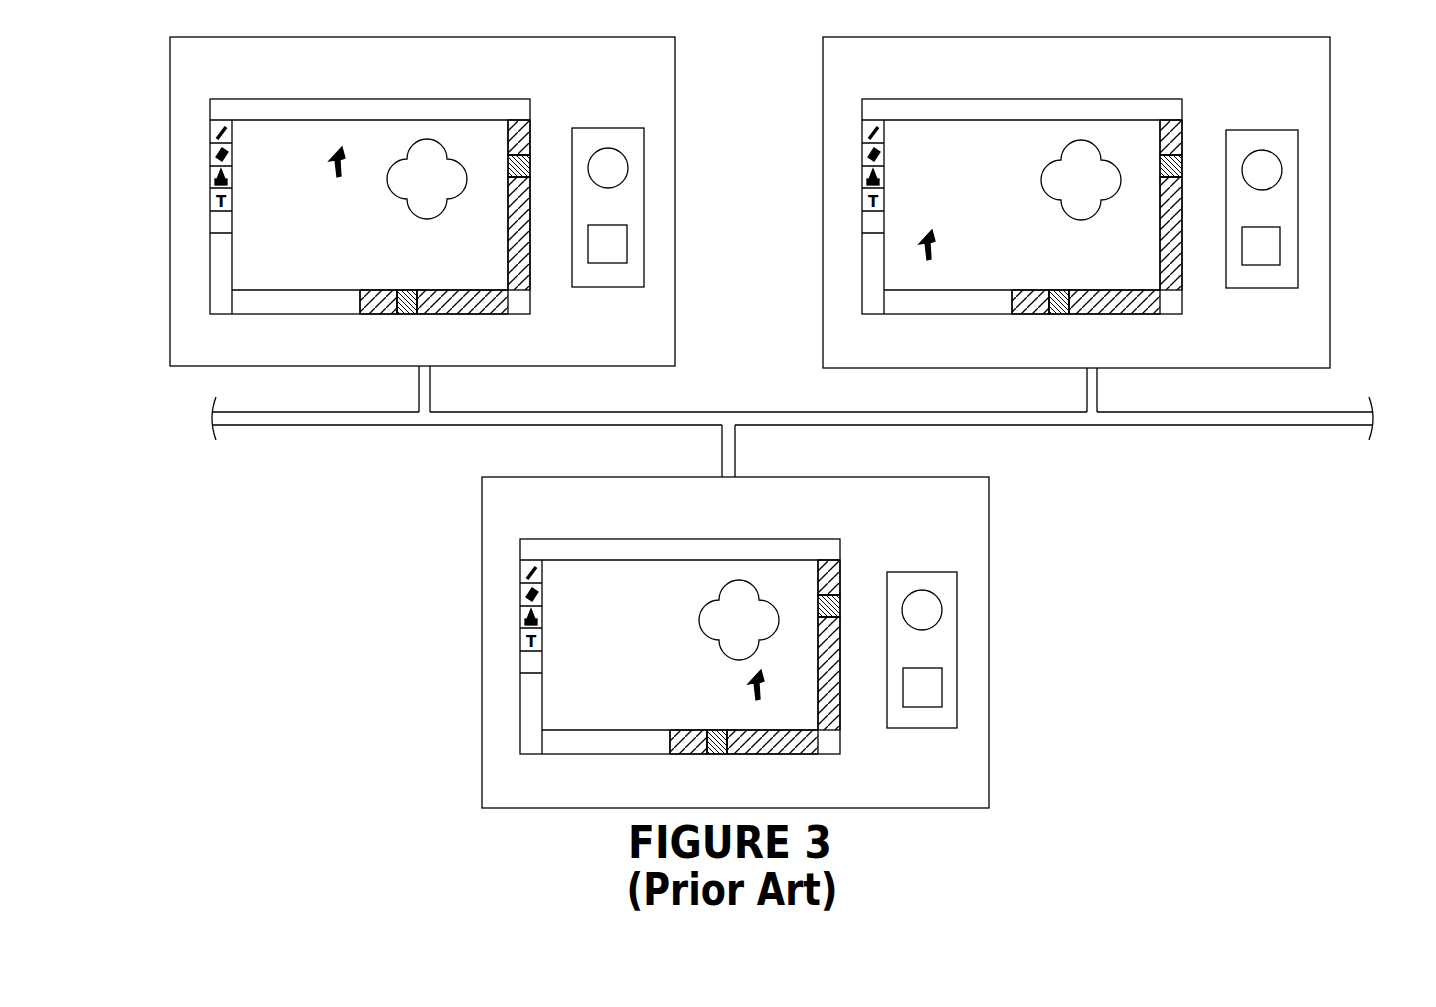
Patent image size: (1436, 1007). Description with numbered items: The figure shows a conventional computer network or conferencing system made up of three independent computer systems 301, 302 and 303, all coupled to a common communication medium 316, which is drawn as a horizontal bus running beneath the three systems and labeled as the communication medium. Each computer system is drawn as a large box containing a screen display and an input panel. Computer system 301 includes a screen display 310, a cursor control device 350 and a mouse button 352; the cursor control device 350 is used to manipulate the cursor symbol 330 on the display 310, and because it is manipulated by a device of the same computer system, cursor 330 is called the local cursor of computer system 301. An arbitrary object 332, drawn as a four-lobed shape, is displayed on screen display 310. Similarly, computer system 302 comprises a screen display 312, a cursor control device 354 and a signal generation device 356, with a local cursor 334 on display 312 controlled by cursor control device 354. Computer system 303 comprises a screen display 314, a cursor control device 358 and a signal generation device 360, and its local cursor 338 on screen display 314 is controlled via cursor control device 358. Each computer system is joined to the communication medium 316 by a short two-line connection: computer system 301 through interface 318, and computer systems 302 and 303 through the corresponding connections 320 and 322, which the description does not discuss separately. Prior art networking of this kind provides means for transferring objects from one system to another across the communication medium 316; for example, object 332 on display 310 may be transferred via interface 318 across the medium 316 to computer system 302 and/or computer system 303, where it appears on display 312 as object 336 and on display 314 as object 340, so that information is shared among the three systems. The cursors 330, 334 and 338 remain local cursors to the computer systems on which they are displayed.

The computer system 301 is at (675, 68).
The computer system 302 is at (1330, 70).
The computer system 303 is at (845, 477).
The screen display 310 is at (356, 99).
The screen display 312 is at (960, 99).
The screen display 314 is at (636, 539).
The communication medium 316 is at (1290, 425).
The interface 318 is at (430, 401).
The connection of second computer to communication medium 320 is at (1097, 402).
The connection of third computer to communication medium 322 is at (735, 465).
The cursor symbol 330 is at (341, 175).
The object 332 is at (430, 220).
The local cursor 334 is at (932, 256).
The object 336 is at (1085, 220).
The local cursor 338 is at (758, 698).
The object 340 is at (740, 656).
The cursor control device 350 is at (615, 128).
The mouse button 352 is at (605, 263).
The cursor control device 354 is at (1270, 130).
The signal generation device 356 is at (1262, 265).
The cursor control device 358 is at (930, 572).
The signal generation device 360 is at (920, 707).